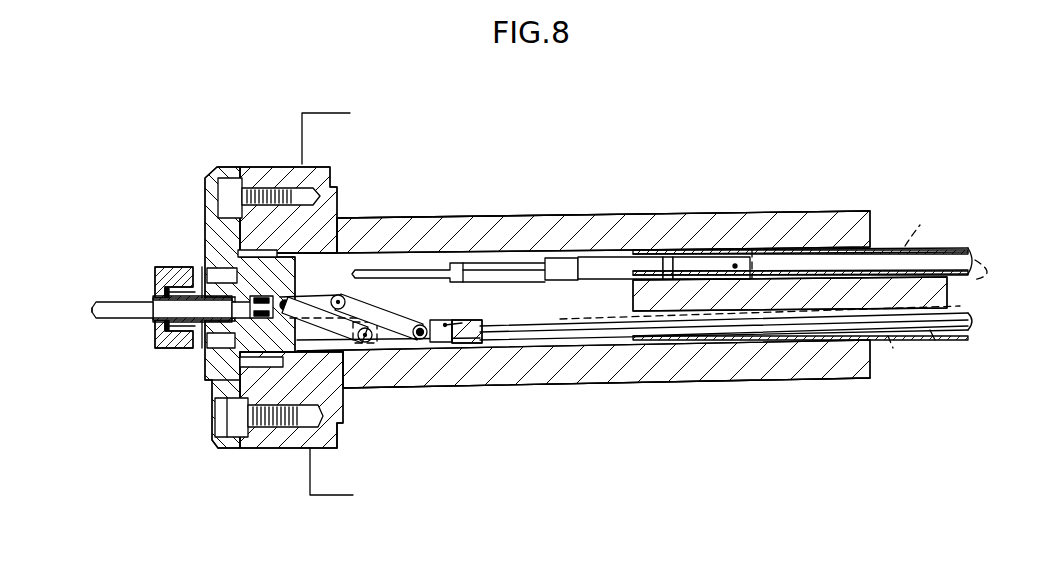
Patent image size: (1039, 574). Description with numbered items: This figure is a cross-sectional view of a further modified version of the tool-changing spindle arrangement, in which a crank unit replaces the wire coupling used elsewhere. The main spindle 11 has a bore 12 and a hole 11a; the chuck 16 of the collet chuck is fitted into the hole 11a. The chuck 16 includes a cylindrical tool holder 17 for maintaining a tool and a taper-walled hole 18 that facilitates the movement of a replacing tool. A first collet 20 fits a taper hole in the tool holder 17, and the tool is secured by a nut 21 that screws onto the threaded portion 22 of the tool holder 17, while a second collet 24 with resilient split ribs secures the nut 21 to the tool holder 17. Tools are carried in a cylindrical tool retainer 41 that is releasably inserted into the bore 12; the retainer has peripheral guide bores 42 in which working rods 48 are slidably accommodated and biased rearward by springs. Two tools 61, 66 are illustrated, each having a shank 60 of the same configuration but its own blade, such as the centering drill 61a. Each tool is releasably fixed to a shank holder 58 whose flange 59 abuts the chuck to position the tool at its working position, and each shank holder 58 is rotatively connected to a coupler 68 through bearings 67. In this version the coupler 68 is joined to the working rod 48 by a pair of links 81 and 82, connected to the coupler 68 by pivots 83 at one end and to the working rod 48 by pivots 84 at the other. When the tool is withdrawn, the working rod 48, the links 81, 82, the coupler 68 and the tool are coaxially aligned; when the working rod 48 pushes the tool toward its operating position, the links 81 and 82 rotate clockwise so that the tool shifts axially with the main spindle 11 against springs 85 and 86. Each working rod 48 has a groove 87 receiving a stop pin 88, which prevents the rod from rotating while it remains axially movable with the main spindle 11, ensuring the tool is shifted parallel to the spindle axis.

The main spindle 11 is at (657, 222).
The hole of the main spindle 11a is at (252, 227).
The bore 12 is at (427, 257).
The chuck 16 is at (218, 237).
The cylindrical tool holder 17 is at (213, 272).
The taper-walled hole 18 is at (333, 228).
The first collet 20 is at (160, 297).
The nut 21 is at (153, 340).
The threaded portion 22 is at (182, 352).
The second collet 24 is at (373, 343).
The cylindrical tool retainer 41 is at (897, 247).
The guide bore 42 is at (817, 243).
The working rod 48 is at (953, 257).
The shank holder 58 is at (221, 282).
The flange 59 is at (220, 335).
The shank 60 is at (167, 310).
The tool 61 is at (115, 323).
The blade (centering drill) 61a is at (108, 300).
The tool 66 is at (515, 260).
The bearings 67 is at (203, 347).
The coupler 68 is at (283, 355).
The link 81 is at (343, 357).
The link 82 is at (417, 353).
The pivot 83 is at (340, 303).
The pivot 84 is at (455, 387).
The spring 85 is at (308, 312).
The spring 86 is at (400, 327).
The groove 87 is at (973, 277).
The stop pin 88 is at (913, 237).